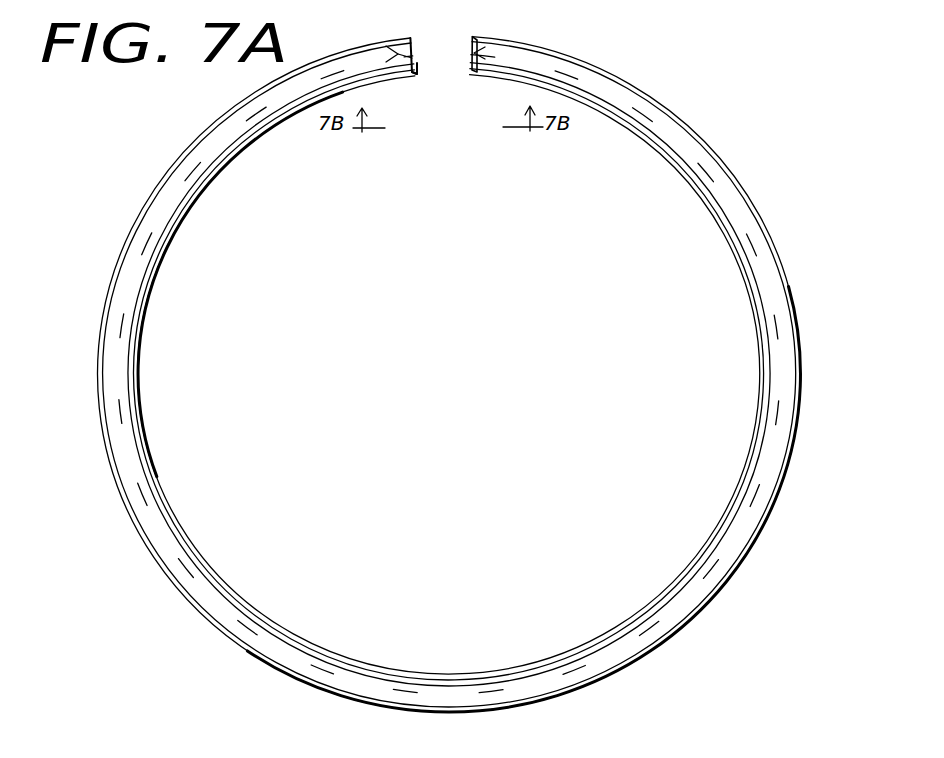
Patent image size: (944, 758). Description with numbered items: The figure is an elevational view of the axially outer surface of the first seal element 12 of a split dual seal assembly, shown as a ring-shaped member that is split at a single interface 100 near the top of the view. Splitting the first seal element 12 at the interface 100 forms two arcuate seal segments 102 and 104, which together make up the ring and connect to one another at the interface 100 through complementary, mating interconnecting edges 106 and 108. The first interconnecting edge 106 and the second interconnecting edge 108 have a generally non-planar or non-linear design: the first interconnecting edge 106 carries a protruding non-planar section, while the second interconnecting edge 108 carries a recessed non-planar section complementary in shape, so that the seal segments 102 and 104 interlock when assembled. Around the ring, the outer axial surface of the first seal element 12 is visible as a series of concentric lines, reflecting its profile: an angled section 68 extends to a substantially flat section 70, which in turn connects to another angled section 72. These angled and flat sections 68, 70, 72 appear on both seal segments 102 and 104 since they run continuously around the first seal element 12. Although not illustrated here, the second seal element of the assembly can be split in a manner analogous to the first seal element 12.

The first seal element 12 is at (700, 82).
The angled section 68 is at (133, 313).
The substantially flat section 70 is at (176, 195).
The angled section 72 is at (104, 314).
The interface 100 is at (432, 48).
The arcuate seal segment 102 is at (192, 143).
The arcuate seal segment 104 is at (708, 140).
The first interconnecting edge 106 is at (415, 63).
The second interconnecting edge 108 is at (471, 52).